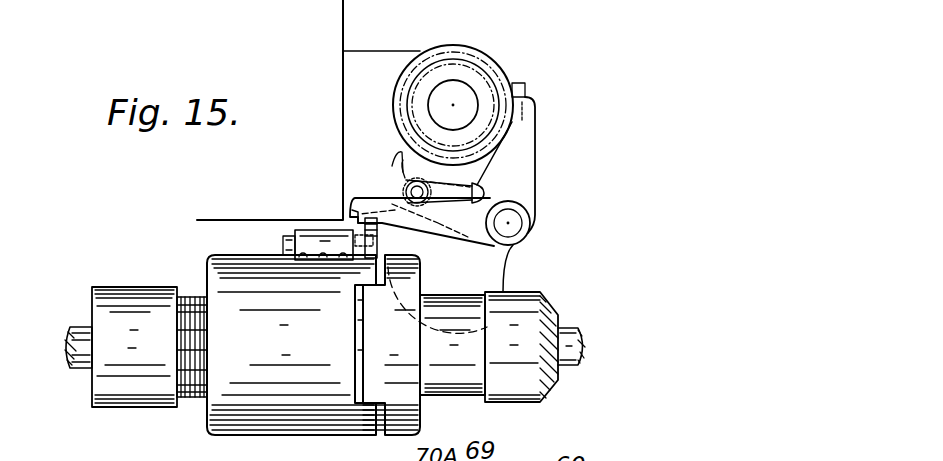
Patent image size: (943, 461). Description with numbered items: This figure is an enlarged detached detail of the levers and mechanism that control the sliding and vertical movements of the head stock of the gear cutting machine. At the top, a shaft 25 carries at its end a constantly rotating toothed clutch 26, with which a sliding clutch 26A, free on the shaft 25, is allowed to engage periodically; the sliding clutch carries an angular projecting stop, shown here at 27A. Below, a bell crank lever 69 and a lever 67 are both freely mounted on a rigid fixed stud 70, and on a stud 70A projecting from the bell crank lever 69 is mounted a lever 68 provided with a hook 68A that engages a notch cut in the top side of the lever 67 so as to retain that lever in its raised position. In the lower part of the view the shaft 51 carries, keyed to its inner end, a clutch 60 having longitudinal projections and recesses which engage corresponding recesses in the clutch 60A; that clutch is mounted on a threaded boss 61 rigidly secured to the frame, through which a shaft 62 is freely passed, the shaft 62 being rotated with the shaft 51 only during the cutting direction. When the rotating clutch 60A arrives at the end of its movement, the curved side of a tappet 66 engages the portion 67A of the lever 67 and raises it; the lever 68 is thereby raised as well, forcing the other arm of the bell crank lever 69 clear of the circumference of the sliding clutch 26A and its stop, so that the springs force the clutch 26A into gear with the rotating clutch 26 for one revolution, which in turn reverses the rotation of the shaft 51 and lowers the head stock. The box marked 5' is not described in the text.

The shaft 25 is at (450, 92).
The toothed clutch 26 is at (409, 90).
The sliding clutch 26A is at (505, 78).
The stop block 27A is at (526, 91).
The lever 68 is at (400, 168).
The hook 68A is at (484, 193).
The stud 70A is at (409, 185).
The bell crank lever 69 is at (536, 156).
The fixed stud 70 is at (514, 223).
The lever 67 is at (356, 200).
The lever portion 67A is at (352, 212).
The tappet 66 is at (378, 232).
The solenoid 5' is at (327, 281).
The clutch 60 is at (453, 300).
The clutch 60A is at (212, 420).
The threaded boss 61 is at (192, 296).
The shaft 62 is at (66, 340).
The shaft 51 is at (572, 340).